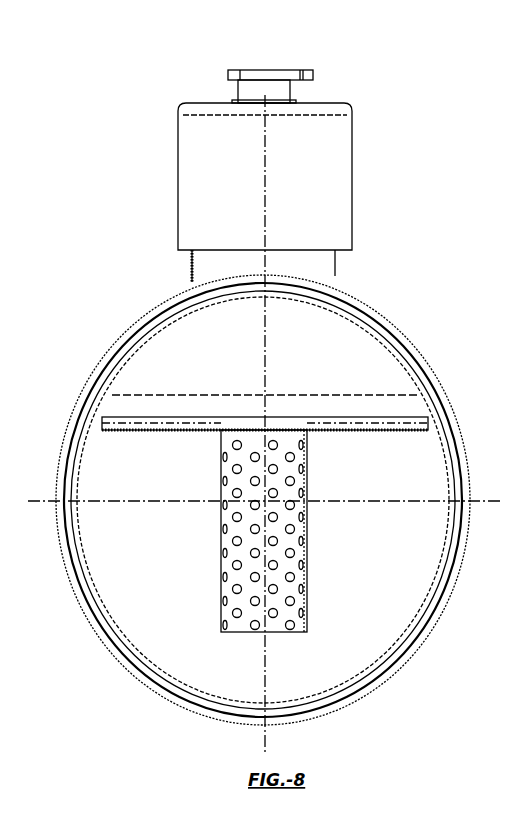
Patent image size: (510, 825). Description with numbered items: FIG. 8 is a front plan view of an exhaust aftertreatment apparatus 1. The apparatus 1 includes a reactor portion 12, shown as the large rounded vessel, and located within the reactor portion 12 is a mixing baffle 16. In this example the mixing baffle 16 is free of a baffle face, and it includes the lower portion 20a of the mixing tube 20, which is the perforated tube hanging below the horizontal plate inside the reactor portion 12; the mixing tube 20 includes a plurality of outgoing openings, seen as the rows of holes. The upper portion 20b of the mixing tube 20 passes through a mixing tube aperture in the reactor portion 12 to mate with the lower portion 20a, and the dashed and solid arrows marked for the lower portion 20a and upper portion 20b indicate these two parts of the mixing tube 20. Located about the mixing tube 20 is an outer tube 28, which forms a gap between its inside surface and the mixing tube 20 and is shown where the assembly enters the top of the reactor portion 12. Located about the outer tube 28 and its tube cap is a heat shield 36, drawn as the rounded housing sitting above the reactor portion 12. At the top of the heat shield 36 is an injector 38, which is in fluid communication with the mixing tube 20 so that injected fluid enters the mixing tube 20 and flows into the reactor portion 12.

The exhaust aftertreatment apparatus 1 is at (264, 388).
The reactor portion 12 is at (400, 337).
The mixing baffle 16 is at (306, 507).
The mixing tube 20 is at (146, 416).
The lower portion of the mixing tube 20a is at (220, 563).
The upper portion of the mixing tube 20b is at (240, 328).
The outer tube 28 is at (192, 278).
The heat shield 36 is at (180, 165).
The injector 38 is at (238, 73).